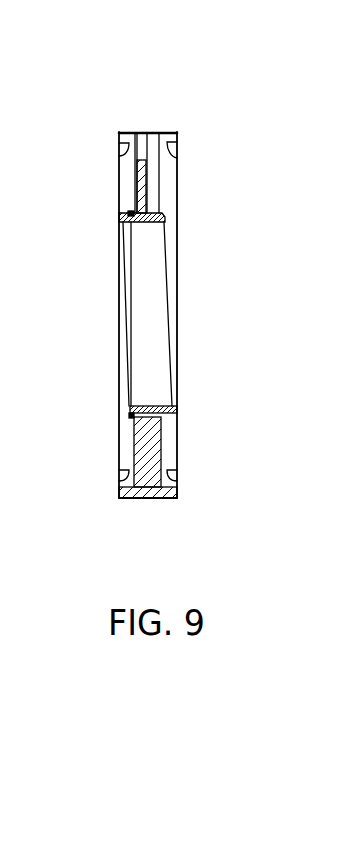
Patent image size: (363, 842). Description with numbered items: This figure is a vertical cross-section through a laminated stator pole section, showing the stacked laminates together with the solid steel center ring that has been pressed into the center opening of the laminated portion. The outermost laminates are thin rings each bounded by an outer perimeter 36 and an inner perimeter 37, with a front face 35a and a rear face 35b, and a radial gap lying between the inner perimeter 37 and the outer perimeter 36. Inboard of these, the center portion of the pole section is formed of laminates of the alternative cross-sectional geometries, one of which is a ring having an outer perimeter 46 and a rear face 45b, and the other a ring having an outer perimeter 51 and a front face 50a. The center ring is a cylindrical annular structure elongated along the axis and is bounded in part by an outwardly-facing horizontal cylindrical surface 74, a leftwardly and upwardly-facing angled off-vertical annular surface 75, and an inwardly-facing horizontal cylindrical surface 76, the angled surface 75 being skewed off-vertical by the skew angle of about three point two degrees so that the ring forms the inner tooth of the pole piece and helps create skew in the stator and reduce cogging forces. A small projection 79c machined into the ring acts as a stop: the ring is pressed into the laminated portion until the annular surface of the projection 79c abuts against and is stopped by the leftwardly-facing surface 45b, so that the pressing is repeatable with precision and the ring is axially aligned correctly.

The outer perimeter 36 is at (127, 131).
The inner perimeter 37 is at (119, 157).
The rear face 45b is at (136, 189).
The outer perimeter 46 is at (140, 131).
The outer perimeter 51 is at (152, 131).
The outwardly-facing cylindrical horizontal surface 74 is at (153, 212).
The leftwardly and upwardly-facing angled off-vertical annular surface 75 is at (170, 410).
The inwardly-facing horizontal cylindrical surface 76 is at (146, 404).
The projection 79c is at (114, 422).
The front face 50a is at (161, 443).
The front face 35a is at (177, 488).
The rear face 35b is at (119, 489).